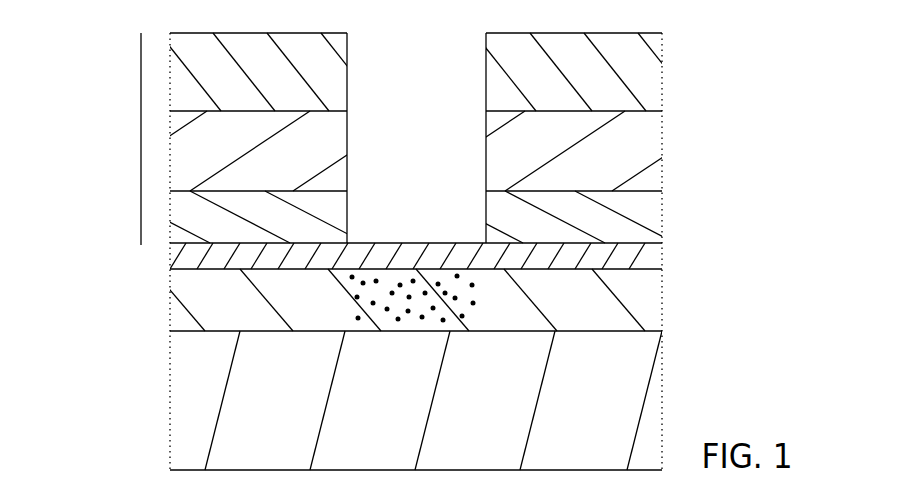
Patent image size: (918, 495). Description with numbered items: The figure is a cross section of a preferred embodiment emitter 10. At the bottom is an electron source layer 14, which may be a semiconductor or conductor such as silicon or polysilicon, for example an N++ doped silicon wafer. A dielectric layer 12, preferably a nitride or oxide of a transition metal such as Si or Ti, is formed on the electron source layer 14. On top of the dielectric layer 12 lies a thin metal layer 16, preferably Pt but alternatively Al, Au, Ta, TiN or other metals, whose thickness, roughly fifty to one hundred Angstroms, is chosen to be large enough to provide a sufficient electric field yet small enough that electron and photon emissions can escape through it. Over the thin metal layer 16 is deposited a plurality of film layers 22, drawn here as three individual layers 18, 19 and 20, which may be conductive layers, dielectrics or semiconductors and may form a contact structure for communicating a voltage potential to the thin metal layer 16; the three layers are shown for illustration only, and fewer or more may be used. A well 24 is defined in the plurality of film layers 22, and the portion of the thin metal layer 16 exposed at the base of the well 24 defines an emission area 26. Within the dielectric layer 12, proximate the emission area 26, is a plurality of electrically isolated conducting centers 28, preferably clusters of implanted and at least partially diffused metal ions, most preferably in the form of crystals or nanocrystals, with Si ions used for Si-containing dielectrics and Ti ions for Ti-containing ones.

The emitter 10 is at (771, 158).
The dielectric layer 12 is at (662, 312).
The electron source layer 14 is at (170, 439).
The thin metal layer 16 is at (173, 262).
The film layer 18 is at (665, 221).
The film layer 19 is at (662, 146).
The film layer 20 is at (662, 58).
The plurality of film layers 22 is at (141, 172).
The well 24 is at (416, 138).
The emission area 26 is at (382, 243).
The electrically isolated conducting centers 28 is at (415, 330).